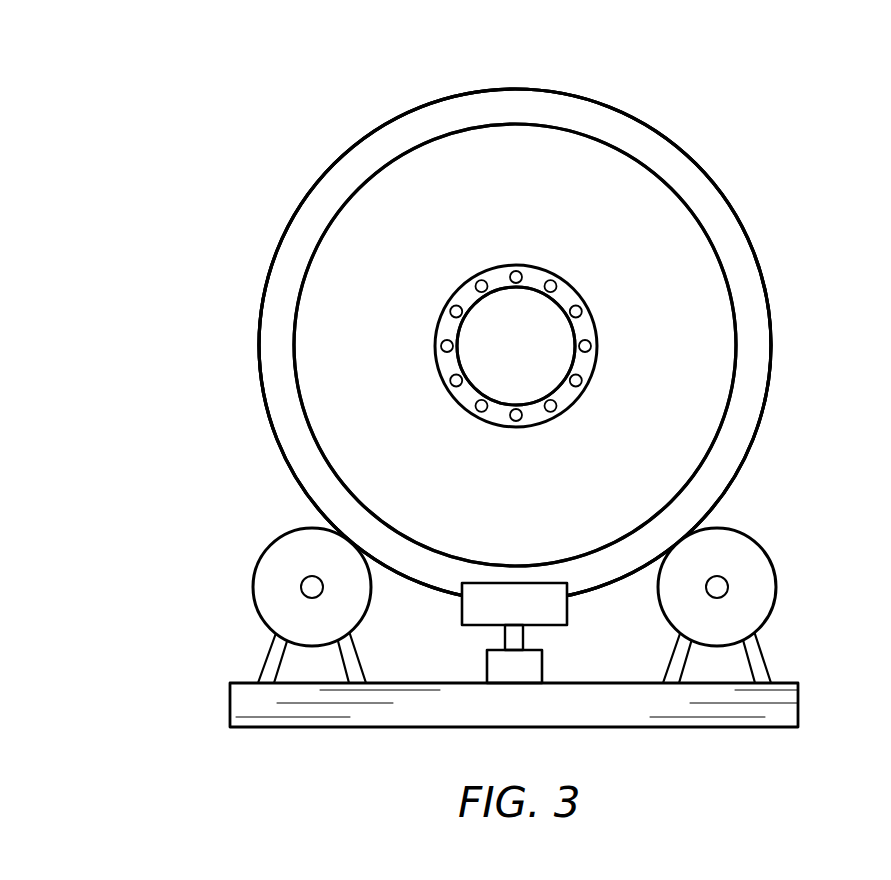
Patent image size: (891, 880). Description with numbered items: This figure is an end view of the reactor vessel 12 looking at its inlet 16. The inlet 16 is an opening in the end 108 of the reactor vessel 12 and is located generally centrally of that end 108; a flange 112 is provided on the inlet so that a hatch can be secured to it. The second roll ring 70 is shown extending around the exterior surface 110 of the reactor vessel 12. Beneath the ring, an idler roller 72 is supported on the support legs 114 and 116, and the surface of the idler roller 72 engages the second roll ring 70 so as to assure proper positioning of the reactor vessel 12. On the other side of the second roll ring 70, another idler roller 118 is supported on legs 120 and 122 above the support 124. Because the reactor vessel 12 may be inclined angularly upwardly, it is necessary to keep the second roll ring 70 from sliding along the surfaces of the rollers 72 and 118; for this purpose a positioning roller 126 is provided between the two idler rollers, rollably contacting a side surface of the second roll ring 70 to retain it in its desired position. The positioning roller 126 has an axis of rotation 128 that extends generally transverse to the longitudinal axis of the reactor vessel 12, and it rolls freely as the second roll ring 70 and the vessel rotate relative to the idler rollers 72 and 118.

The reactor vessel 12 is at (592, 128).
The exterior surface 110 is at (547, 130).
The end 108 is at (708, 250).
The second roll ring 70 is at (757, 340).
The flange 112 is at (462, 295).
The inlet 16 is at (468, 357).
The idler roller 118 is at (268, 563).
The idler roller 72 is at (757, 557).
The leg 122 is at (272, 657).
The leg 120 is at (348, 650).
The support leg 116 is at (670, 673).
The support leg 114 is at (758, 665).
The positioning roller 126 is at (507, 592).
The axis of rotation 128 is at (525, 643).
The support 124 is at (548, 717).